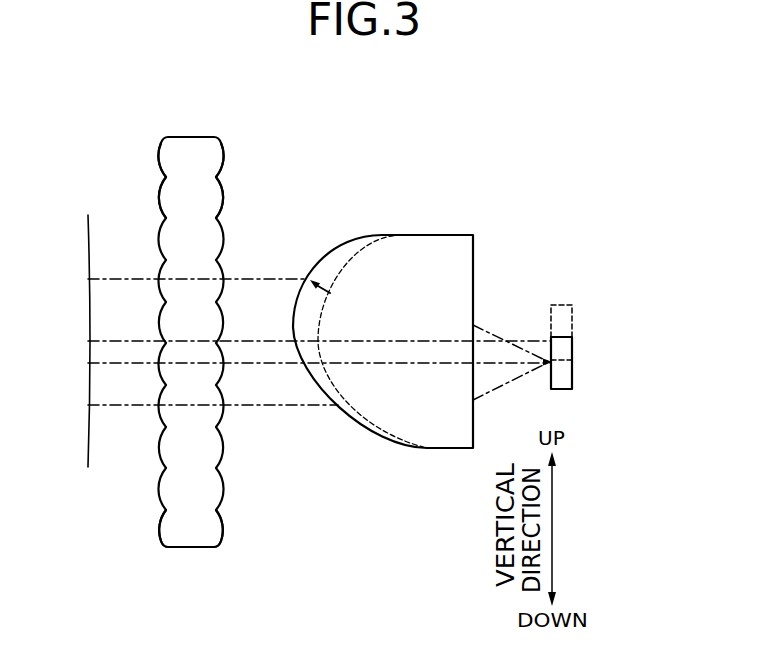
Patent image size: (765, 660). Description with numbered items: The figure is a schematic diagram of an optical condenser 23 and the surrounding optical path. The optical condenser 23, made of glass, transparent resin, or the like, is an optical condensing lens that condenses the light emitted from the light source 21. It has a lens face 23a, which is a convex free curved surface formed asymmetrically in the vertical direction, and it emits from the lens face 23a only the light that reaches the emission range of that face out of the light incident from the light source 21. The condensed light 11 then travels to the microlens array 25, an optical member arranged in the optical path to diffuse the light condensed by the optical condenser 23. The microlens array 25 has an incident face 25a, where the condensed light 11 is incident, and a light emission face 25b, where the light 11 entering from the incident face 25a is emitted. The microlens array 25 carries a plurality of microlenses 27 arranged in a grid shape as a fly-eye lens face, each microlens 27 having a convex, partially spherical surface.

The light 11 is at (289, 408).
The light source 21 is at (584, 373).
The optical condenser 23 is at (365, 313).
The lens face 23a is at (326, 259).
The microlens array 25 is at (190, 126).
The incident face 25a is at (238, 155).
The light emission face 25b is at (145, 182).
The microlens 27 is at (225, 522).